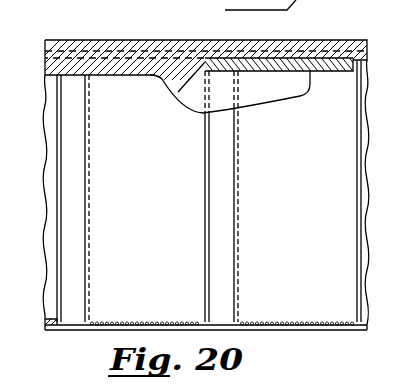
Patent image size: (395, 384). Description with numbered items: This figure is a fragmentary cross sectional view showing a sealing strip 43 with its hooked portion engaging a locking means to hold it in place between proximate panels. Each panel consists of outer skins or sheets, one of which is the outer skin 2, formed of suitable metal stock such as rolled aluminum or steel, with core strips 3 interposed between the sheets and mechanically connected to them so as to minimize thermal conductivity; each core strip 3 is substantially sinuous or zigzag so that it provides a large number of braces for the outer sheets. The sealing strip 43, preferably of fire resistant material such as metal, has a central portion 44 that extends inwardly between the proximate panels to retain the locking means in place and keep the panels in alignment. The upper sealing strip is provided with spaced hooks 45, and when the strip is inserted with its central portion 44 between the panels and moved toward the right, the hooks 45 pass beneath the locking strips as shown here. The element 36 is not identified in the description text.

The outer skin 2 is at (292, 328).
The core strip 3 is at (146, 240).
The sealing strip 36 is at (334, 72).
The sealing strip 43 is at (118, 40).
The central portion 44 is at (103, 78).
The hook 45 is at (271, 105).